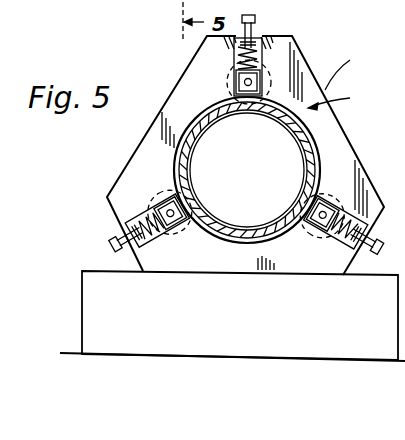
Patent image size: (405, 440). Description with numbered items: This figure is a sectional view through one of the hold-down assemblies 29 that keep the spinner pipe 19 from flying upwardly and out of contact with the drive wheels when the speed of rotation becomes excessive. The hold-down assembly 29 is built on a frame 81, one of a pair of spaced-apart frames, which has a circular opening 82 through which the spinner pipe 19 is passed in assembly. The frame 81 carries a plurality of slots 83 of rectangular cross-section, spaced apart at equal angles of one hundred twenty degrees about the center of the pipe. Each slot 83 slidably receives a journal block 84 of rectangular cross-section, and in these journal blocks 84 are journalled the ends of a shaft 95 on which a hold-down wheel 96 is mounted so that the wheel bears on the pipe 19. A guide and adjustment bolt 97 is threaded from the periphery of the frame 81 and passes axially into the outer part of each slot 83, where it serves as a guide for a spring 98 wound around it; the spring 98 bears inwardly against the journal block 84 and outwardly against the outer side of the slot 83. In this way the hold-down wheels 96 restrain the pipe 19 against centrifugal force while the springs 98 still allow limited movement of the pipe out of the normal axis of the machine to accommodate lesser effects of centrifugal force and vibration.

The spinner pipe 19 is at (250, 228).
The hold-down assembly 29 is at (342, 85).
The frame 81 is at (306, 62).
The circular opening 82 is at (172, 152).
The slot 83 is at (127, 220).
The journal block 84 is at (162, 244).
The shaft 95 is at (165, 215).
The hold-down wheel 96 is at (247, 103).
The guide and adjustment bolt 97 is at (106, 241).
The spring 98 is at (130, 252).